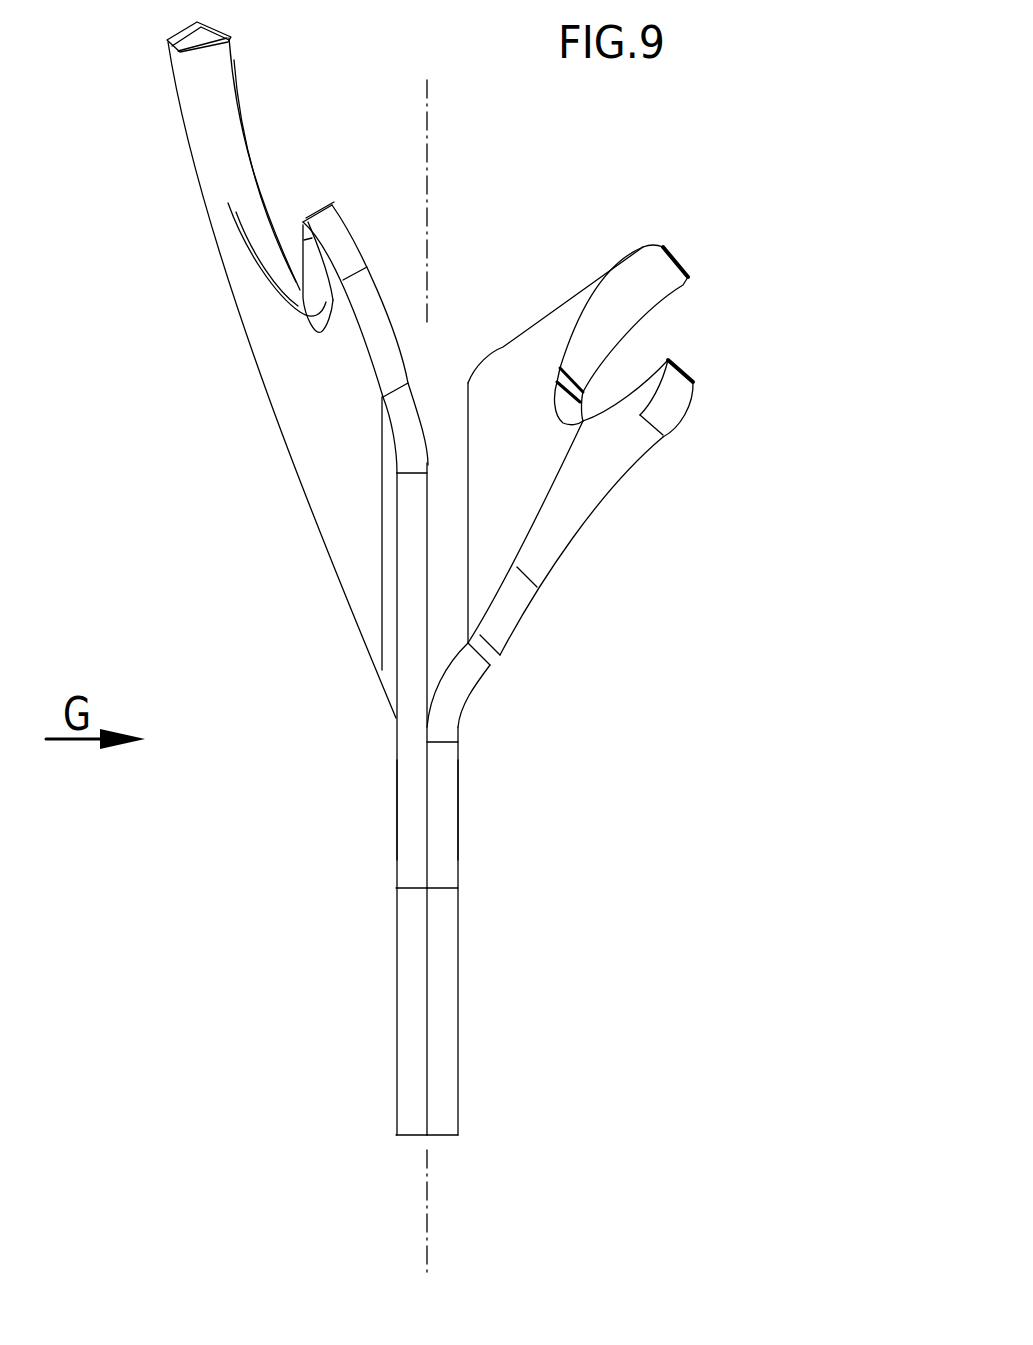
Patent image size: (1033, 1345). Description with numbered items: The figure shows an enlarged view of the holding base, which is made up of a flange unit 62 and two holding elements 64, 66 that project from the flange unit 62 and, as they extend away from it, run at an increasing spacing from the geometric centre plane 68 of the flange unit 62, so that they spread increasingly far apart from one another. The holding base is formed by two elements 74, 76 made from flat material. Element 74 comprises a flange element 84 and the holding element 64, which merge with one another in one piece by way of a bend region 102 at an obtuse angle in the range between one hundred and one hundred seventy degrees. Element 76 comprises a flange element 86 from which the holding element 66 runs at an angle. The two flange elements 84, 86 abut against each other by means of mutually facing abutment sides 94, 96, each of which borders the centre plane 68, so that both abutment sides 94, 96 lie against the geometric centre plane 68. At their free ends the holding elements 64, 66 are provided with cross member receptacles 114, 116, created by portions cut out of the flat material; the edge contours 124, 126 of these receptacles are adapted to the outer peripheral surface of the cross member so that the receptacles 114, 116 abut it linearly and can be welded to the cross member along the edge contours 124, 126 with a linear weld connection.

The flange unit 62 is at (452, 918).
The holding element 64 is at (197, 137).
The holding element 66 is at (593, 433).
The geometric centre plane 68 is at (427, 1222).
The element 74 is at (380, 798).
The element 76 is at (472, 797).
The flange element 84 is at (407, 957).
The flange element 86 is at (442, 997).
The abutment side 94 is at (430, 1060).
The abutment side 96 is at (427, 1082).
The bend region 102 is at (392, 594).
The cross member receptacle 114 is at (248, 136).
The cross member receptacle 116 is at (665, 294).
The edge contour 124 is at (258, 206).
The edge contour 126 is at (610, 330).